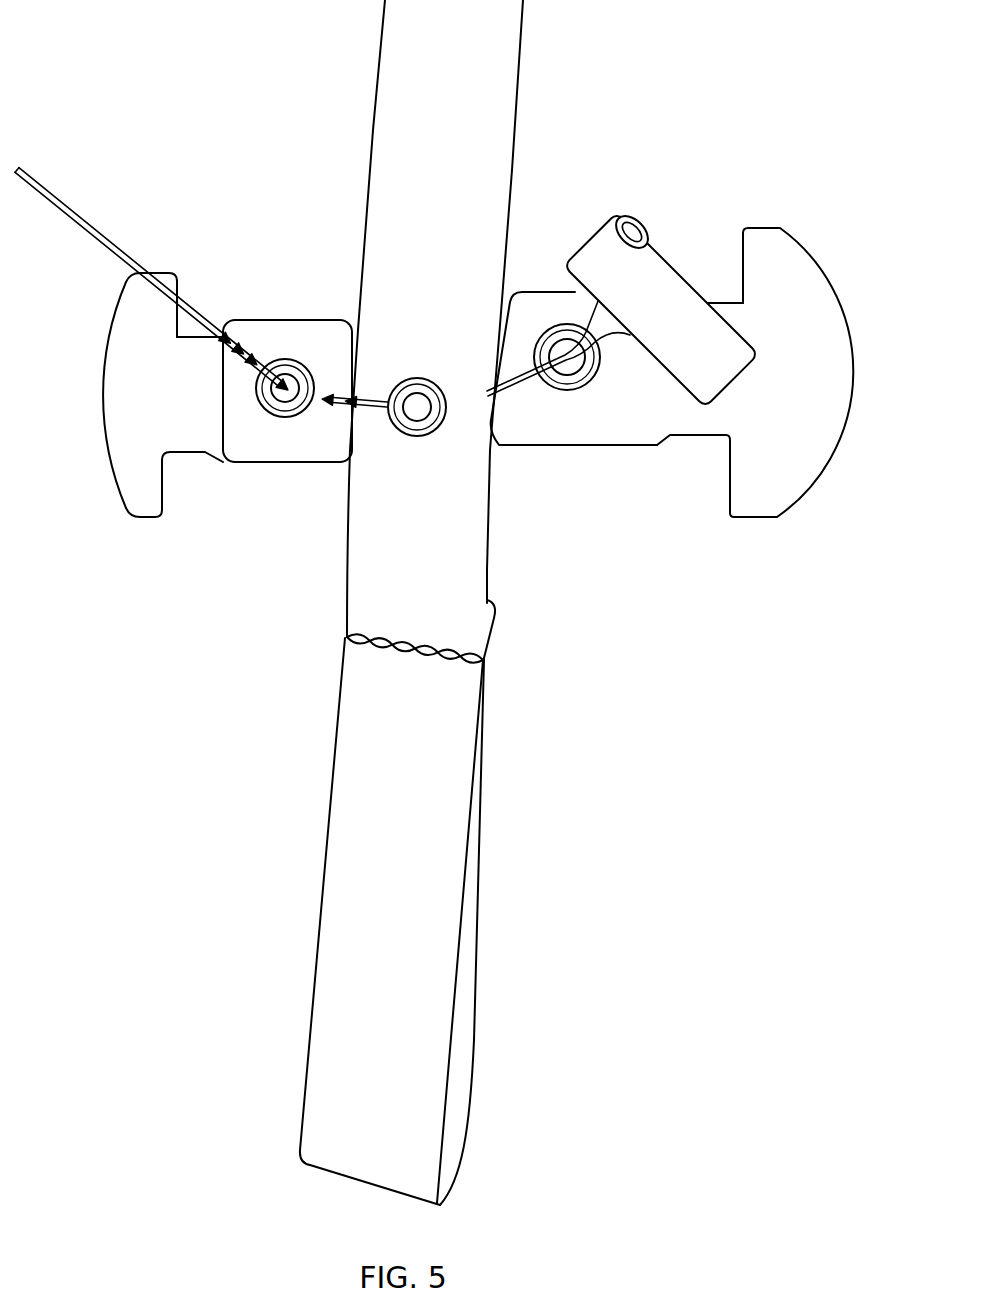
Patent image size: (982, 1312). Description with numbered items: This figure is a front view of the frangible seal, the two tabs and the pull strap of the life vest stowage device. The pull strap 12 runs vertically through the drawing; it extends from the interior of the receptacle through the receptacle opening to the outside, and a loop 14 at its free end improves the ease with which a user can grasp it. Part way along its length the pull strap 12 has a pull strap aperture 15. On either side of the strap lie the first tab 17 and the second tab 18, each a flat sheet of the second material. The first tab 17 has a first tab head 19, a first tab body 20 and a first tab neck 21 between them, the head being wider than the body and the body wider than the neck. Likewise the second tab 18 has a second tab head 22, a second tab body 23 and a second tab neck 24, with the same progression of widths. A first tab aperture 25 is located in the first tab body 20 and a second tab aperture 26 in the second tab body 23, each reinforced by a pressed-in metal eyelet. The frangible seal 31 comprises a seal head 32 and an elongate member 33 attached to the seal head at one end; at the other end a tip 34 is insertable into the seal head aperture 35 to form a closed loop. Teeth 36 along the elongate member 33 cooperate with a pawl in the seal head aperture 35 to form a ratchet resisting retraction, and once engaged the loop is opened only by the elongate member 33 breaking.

The pull strap 12 is at (520, 77).
The loop 14 is at (472, 1128).
The pull strap aperture 15 is at (410, 428).
The first tab 17 is at (205, 422).
The second tab 18 is at (670, 372).
The first tab head 19 is at (117, 503).
The first tab body 20 is at (315, 320).
The first tab neck 21 is at (178, 452).
The second tab head 22 is at (753, 518).
The second tab body 23 is at (522, 290).
The second tab neck 24 is at (697, 437).
The first tab aperture 25 is at (286, 400).
The second tab aperture 26 is at (572, 365).
The frangible seal 31 is at (644, 283).
The seal head 32 is at (683, 277).
The elongate member 33 is at (505, 400).
The tip 34 is at (55, 190).
The seal head aperture 35 is at (638, 218).
The teeth 36 is at (254, 358).